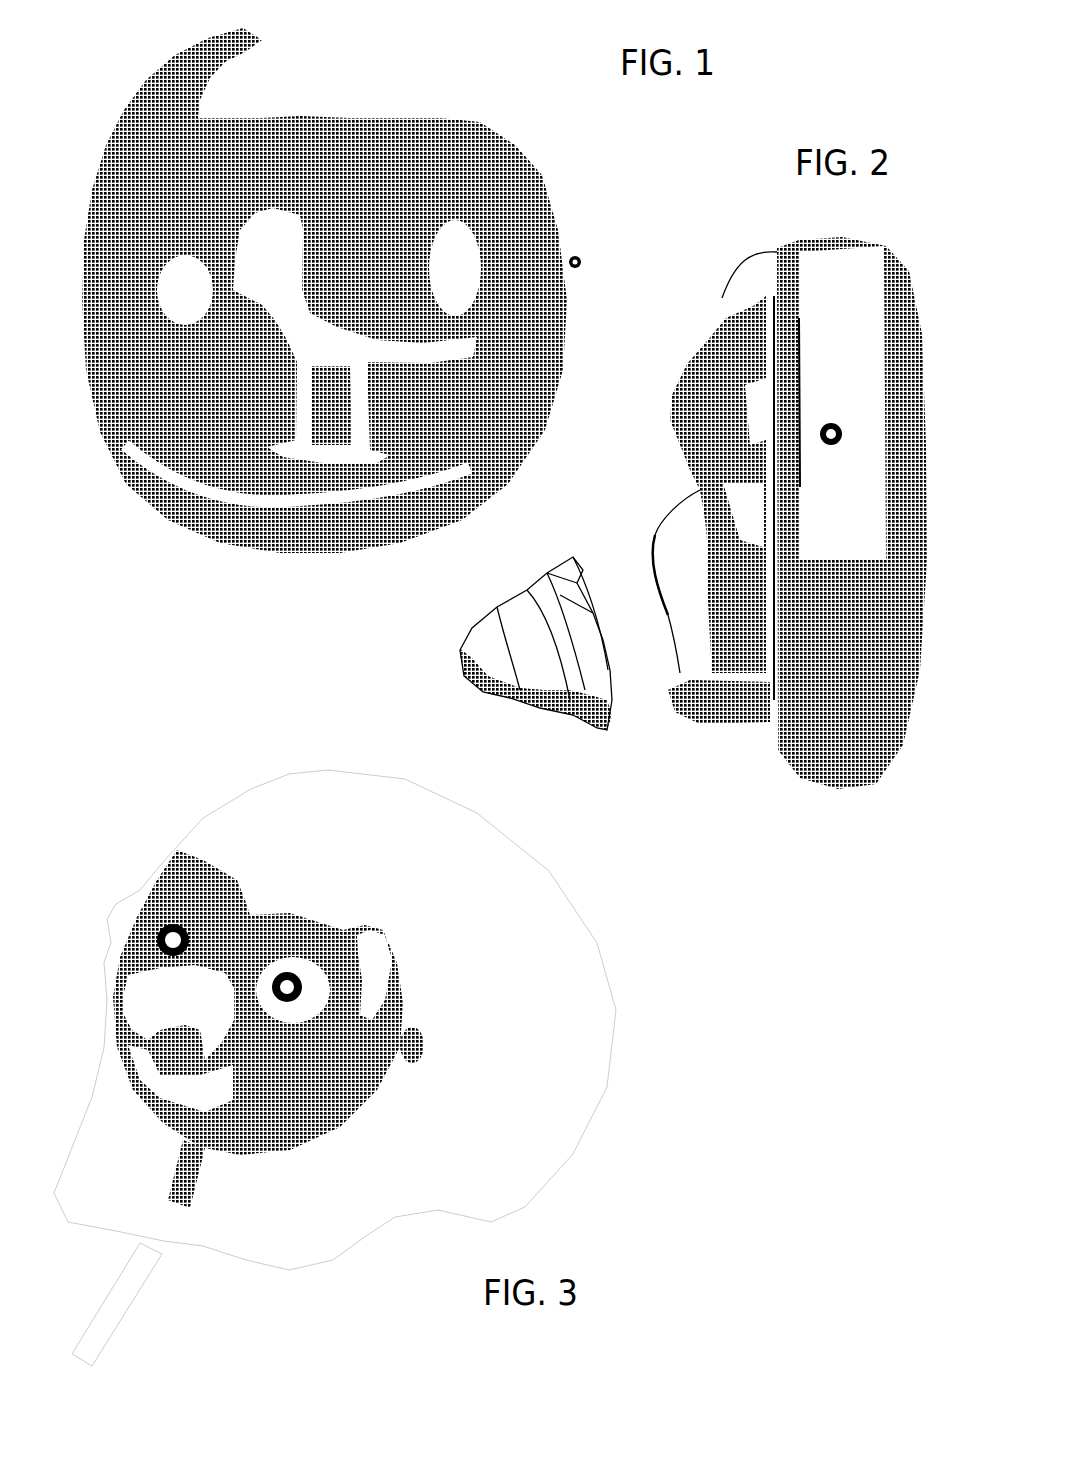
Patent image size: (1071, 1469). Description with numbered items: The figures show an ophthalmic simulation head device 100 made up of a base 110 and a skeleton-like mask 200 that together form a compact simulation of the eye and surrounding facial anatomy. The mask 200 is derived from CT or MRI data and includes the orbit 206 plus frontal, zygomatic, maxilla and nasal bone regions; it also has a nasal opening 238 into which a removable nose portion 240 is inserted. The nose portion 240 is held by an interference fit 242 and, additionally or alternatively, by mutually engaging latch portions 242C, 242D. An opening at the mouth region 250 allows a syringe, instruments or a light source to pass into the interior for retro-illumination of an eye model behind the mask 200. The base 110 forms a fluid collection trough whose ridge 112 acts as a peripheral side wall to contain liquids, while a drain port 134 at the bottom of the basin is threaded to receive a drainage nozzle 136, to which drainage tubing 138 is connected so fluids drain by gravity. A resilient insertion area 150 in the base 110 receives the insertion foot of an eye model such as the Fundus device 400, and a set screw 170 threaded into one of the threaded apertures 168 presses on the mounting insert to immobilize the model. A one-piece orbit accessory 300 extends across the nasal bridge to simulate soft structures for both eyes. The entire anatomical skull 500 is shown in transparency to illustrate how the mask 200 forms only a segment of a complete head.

In FIG. 1, the ophthalmic simulation head device 100 is at (250, 592).
In FIG. 2, the ophthalmic simulation head device 100 is at (686, 756).
In FIG. 3, the ophthalmic simulation head device 100 is at (458, 942).
In FIG. 1, the base 110 is at (178, 530).
In FIG. 2, the base 110 is at (875, 762).
In FIG. 3, the base 110 is at (416, 999).
In FIG. 1, the ridge 112 is at (122, 456).
In FIG. 1, the drain port 134 is at (316, 561).
In FIG. 3, the drainage nozzle 136 is at (192, 1205).
In FIG. 3, the drainage tubing 138 is at (110, 1318).
In FIG. 1, the resilient insertion area 150 is at (478, 308).
In FIG. 1, the threaded apertures 168 is at (600, 262).
In FIG. 3, the set screw 170 is at (436, 1043).
In FIG. 1, the mask 200 is at (478, 66).
In FIG. 2, the mask 200 is at (660, 497).
In FIG. 3, the mask 200 is at (211, 841).
In FIG. 1, the orbit 206 is at (460, 208).
In FIG. 2, the nasal opening 238 is at (662, 592).
In FIG. 2, the nose portion 240 is at (461, 685).
In FIG. 3, the nose portion 240 is at (108, 1012).
In FIG. 2, the interference fit 242 is at (636, 568).
In FIG. 2, the latch portion 242C is at (596, 731).
In FIG. 2, the latch portion 242D is at (666, 681).
In FIG. 1, the mouth region opening 250 is at (279, 493).
In FIG. 2, the mouth region opening 250 is at (740, 706).
In FIG. 3, the orbit accessory 300 is at (238, 917).
In FIG. 3, the Fundus device 400 is at (318, 958).
In FIG. 3, the anatomical skull 500 is at (598, 1046).